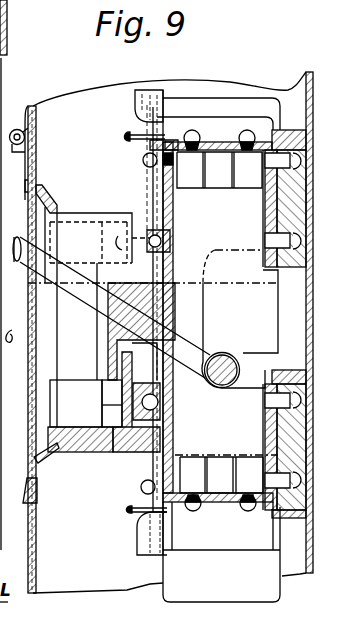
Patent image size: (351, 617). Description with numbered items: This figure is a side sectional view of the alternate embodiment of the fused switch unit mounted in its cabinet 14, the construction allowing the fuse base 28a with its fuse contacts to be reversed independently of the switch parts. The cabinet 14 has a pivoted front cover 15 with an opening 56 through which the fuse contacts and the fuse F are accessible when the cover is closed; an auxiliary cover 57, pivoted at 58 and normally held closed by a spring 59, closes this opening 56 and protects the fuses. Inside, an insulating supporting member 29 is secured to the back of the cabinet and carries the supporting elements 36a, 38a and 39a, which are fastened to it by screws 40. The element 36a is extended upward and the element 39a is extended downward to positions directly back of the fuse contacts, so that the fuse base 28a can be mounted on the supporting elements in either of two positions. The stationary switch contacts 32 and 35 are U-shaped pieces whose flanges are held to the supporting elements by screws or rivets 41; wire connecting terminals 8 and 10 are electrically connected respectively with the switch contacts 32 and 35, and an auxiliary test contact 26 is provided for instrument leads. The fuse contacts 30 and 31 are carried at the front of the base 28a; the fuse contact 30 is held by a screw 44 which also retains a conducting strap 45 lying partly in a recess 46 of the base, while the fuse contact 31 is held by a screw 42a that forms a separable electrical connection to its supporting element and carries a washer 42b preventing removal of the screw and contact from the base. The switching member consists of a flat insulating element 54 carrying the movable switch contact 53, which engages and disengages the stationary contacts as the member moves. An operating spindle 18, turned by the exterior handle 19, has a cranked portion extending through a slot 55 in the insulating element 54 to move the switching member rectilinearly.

The wire connecting terminal 8 is at (137, 554).
The wire connecting terminal 10 is at (136, 102).
The cabinet 14 is at (0, 106).
The front cover 15 is at (36, 577).
The spindle 18 is at (240, 373).
The operating handle 19 is at (14, 266).
The auxiliary test contact 26 is at (130, 137).
The fuse base 28a is at (85, 453).
The insulating member 29 is at (268, 272).
The fuse contact 30 is at (116, 420).
The fuse contact 31 is at (111, 228).
The stationary switch contact 32 is at (246, 455).
The stationary switch contact 35 is at (200, 188).
The supporting element 36a is at (168, 455).
The supporting element 38a is at (205, 242).
The supporting element 39a is at (160, 182).
The screw 40 is at (268, 238).
The screw or rivet 41 is at (249, 510).
The screw 42a is at (170, 244).
The washer 42b is at (150, 250).
The screw 44 is at (122, 407).
The conducting member 45 is at (122, 388).
The recess 46 is at (173, 370).
The movable switch contact 53 is at (236, 188).
The insulating element 54 is at (274, 125).
The slot 55 is at (257, 356).
The opening 56 is at (46, 200).
The auxiliary cover 57 is at (34, 450).
The pivot 58 is at (14, 146).
The spring 59 is at (27, 190).